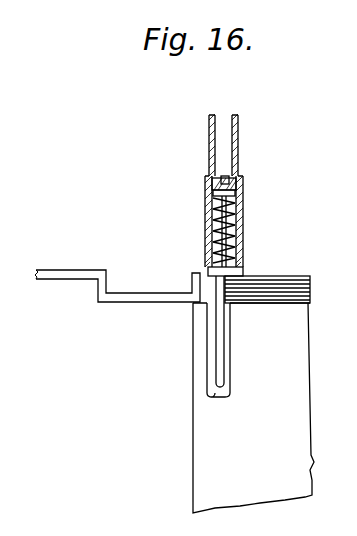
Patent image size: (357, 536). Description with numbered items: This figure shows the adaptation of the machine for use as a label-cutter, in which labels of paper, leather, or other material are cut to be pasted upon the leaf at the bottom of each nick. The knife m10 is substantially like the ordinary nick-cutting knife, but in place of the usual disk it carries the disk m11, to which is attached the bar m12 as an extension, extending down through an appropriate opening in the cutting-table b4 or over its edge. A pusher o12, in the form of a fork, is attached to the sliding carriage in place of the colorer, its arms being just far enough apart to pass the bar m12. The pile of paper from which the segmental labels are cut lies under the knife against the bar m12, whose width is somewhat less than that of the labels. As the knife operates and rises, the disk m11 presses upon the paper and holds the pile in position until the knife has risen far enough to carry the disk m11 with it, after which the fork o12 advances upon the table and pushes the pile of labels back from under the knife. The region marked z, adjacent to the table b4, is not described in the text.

The knife m10 is at (243, 226).
The disk m11 is at (243, 265).
The bar m12 is at (220, 338).
The pusher o12 is at (117, 297).
The pad z is at (262, 305).
The cutting-table b4 is at (253, 408).